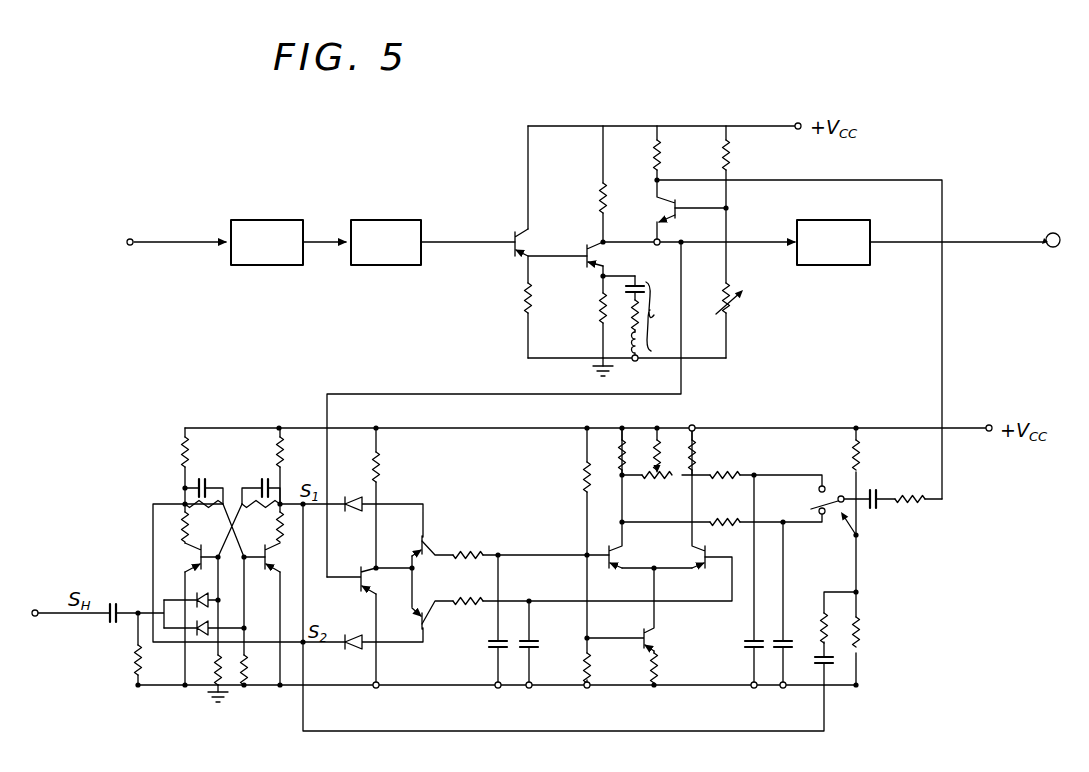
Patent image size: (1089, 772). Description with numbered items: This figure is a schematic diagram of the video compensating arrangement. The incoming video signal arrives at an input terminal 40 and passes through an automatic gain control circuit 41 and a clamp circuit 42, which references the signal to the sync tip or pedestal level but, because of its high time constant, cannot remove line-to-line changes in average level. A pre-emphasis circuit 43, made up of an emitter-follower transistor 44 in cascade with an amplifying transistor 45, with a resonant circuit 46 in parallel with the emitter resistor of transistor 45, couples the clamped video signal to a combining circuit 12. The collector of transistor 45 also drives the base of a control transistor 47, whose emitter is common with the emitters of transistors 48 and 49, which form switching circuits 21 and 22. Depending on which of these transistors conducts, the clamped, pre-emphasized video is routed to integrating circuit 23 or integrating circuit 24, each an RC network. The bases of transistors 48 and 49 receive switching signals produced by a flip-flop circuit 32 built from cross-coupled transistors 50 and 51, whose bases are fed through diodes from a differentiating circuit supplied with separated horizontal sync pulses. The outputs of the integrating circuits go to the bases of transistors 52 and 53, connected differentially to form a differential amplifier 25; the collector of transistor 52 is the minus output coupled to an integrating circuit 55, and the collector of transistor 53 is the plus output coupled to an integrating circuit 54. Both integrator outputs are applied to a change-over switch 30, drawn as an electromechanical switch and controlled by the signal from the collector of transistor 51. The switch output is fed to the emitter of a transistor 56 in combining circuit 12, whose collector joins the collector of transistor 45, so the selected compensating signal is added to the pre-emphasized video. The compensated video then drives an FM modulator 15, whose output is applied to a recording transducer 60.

The input terminal 40 is at (126, 225).
The automatic gain control (AGC) circuit 41 is at (283, 220).
The clamp circuit 42 is at (410, 220).
The pre-emphasis circuit 43 is at (577, 251).
The emitter-follower transistor 44 is at (510, 256).
The amplifying transistor 45 is at (585, 258).
The resonant circuit 46 is at (654, 318).
The combining circuit 12 is at (699, 242).
The transistor 56 is at (679, 216).
The FM modulator 15 is at (848, 267).
The recording transducer 60 is at (1050, 250).
The flip-flop circuit 32 is at (241, 563).
The transistor 50 is at (196, 558).
The transistor 51 is at (286, 556).
The control transistor 47 is at (360, 588).
The transistor 48 is at (418, 540).
The transistor 49 is at (416, 617).
The switching circuit 21 is at (460, 550).
The switching circuit 22 is at (460, 640).
The integrating circuit 23 is at (524, 553).
The integrating circuit 24 is at (554, 600).
The differential amplifier 25 is at (659, 512).
The transistor 52 is at (614, 514).
The transistor 53 is at (704, 514).
The integrating circuit 54 is at (782, 467).
The integrating circuit 55 is at (807, 525).
The change-over switch 30 is at (861, 556).